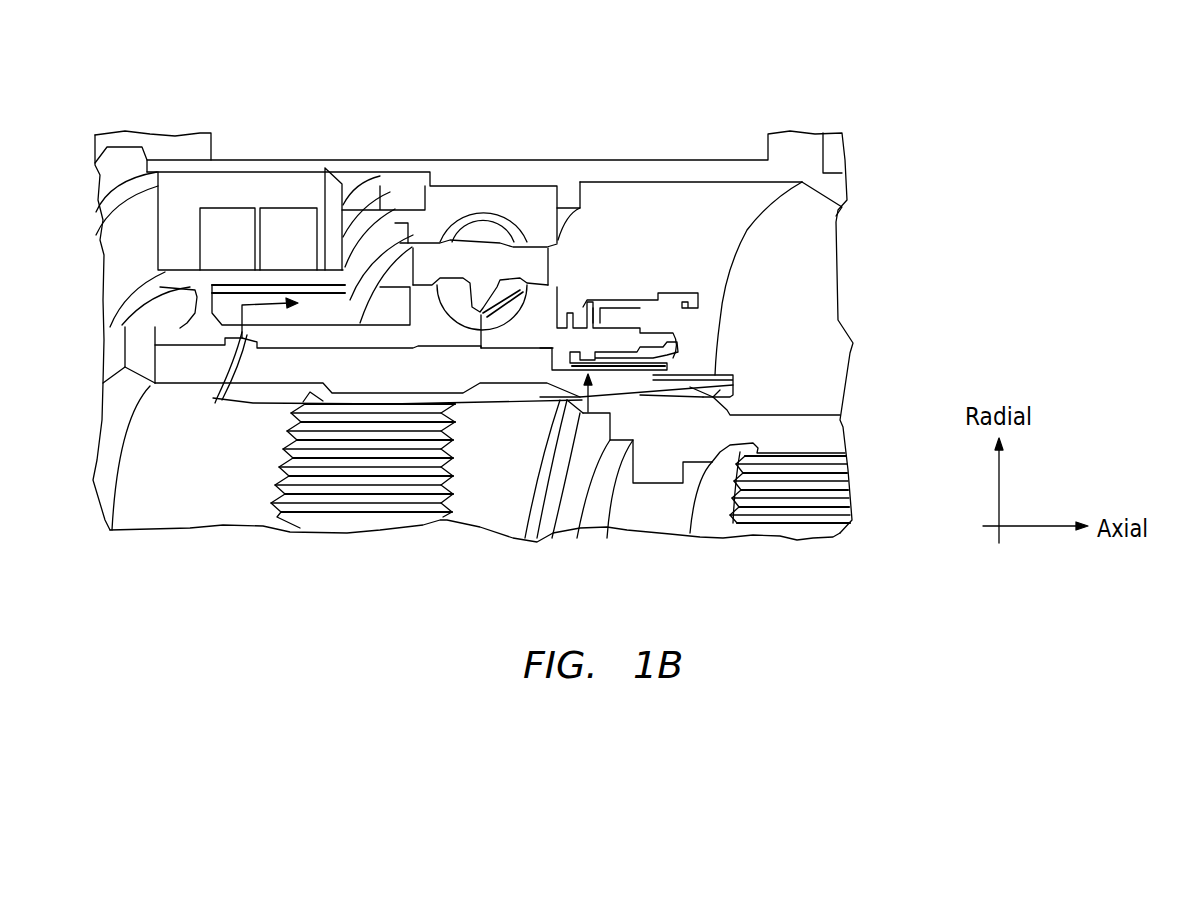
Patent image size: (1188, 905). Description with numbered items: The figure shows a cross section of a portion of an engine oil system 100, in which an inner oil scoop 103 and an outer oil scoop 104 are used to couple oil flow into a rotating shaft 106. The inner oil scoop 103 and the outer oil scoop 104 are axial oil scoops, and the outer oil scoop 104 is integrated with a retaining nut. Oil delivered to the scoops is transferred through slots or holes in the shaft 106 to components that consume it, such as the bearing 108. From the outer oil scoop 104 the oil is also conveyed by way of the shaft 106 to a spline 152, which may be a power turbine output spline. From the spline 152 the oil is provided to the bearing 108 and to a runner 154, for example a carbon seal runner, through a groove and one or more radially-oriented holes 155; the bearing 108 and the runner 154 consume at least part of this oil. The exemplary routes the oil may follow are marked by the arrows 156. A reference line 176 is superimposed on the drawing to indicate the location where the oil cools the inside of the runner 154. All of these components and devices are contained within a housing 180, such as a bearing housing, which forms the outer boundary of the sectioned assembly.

The oil system 100 is at (908, 93).
The housing 180 is at (549, 172).
The reference line 176 is at (282, 285).
The runner 154 is at (322, 283).
The bearing 108 is at (435, 221).
The outer oil scoop 104 is at (657, 333).
The inner oil scoop 103 is at (723, 357).
The radially-oriented holes 155 is at (240, 328).
The spline 152 is at (373, 490).
The oil paths 156 is at (474, 416).
The shaft 106 is at (668, 437).